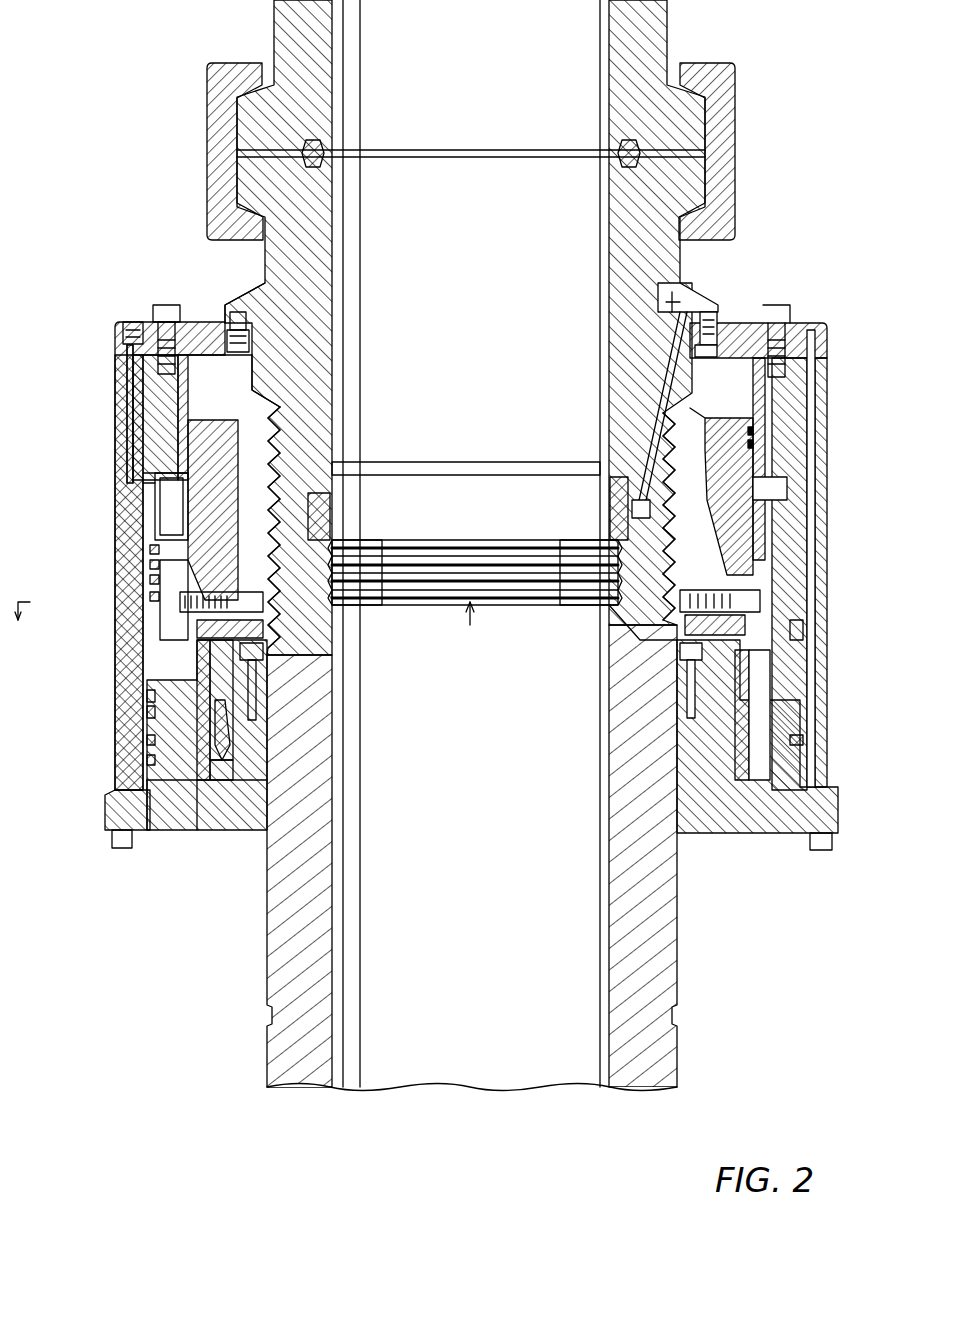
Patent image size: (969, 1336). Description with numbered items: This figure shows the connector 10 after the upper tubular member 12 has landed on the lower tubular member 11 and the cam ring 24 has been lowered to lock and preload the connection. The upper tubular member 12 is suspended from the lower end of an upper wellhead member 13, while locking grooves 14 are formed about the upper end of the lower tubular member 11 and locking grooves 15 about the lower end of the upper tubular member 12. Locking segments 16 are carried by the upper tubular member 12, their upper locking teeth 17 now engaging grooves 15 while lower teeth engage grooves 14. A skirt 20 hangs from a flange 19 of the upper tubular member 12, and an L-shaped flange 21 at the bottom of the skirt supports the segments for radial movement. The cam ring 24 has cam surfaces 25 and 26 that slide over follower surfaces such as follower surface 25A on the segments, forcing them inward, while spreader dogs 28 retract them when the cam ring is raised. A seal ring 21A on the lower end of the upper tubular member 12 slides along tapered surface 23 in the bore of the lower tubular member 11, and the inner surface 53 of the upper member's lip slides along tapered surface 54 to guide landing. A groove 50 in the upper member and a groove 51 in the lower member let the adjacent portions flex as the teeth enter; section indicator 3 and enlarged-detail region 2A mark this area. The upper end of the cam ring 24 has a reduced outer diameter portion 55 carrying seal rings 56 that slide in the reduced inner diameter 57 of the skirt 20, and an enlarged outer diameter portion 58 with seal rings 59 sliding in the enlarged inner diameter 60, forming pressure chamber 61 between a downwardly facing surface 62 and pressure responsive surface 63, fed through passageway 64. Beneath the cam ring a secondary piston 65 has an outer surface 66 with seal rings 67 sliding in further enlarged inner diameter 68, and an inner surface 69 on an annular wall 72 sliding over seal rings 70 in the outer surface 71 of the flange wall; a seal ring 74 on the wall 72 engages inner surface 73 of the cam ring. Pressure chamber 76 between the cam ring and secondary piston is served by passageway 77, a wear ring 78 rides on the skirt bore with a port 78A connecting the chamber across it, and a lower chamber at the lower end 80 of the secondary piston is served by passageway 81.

The connector 10 is at (243, 940).
The lower tubular member 11 is at (680, 933).
The upper tubular member 12 is at (690, 266).
The upper wellhead member 13 is at (710, 122).
The locking grooves 14 is at (652, 625).
The locking grooves 15 is at (268, 425).
The locking segments 16 is at (725, 512).
The upper locking teeth 17 is at (650, 432).
The flange 19 is at (165, 316).
The skirt 20 is at (122, 440).
The L shaped flange 21 is at (228, 835).
The seal ring 21A is at (614, 507).
The tapered surface 23 is at (318, 522).
The cam ring 24 is at (752, 528).
The cam surface 25 is at (290, 455).
The follower surface 25A is at (700, 455).
The cam surface 26 is at (742, 562).
The spreader dogs 28 is at (690, 655).
The groove region 2A is at (300, 598).
The section line 3 is at (242, 628).
The groove 50 is at (162, 500).
The groove 51 is at (340, 545).
The inner surface 53 is at (640, 600).
The tapered surface 54 is at (335, 470).
The reduced outer diameter portion 55 is at (160, 488).
The seal rings 56 is at (183, 422).
The reduced inner diameter 57 is at (213, 455).
The enlarged outer diameter portion 58 is at (165, 650).
The seal rings 59 is at (178, 585).
The enlarged inner diameter 60 is at (152, 540).
The pressure chamber 61 is at (150, 522).
The downwardly facing surface 62 is at (128, 472).
The pressure responsive surface 63 is at (145, 562).
The passageway 64 is at (135, 345).
The secondary piston 65 is at (225, 783).
The outer surface 66 is at (125, 800).
The seal rings 67 is at (150, 765).
The further enlarged inner diameter 68 is at (150, 745).
The inner surface 69 is at (212, 742).
The seal rings 70 is at (158, 730).
The outer surface 71 is at (300, 700).
The annular wall 72 is at (300, 668).
The inner surface 73 is at (228, 756).
The seal ring 74 is at (160, 688).
The pressure chamber 76 is at (165, 775).
The passageway 77 is at (170, 620).
The wear ring 78 is at (800, 693).
The port 78A is at (150, 695).
The lower end 80 is at (200, 790).
The passageway 81 is at (815, 600).